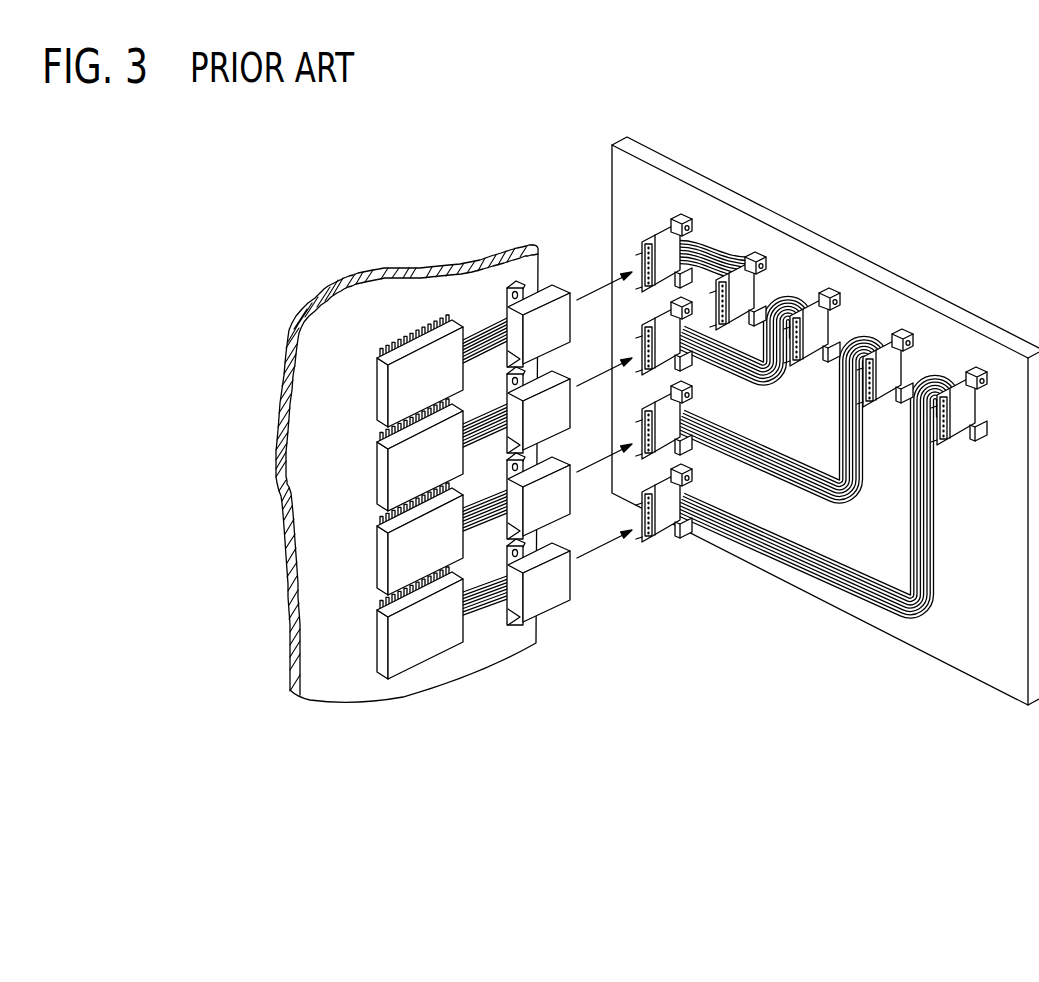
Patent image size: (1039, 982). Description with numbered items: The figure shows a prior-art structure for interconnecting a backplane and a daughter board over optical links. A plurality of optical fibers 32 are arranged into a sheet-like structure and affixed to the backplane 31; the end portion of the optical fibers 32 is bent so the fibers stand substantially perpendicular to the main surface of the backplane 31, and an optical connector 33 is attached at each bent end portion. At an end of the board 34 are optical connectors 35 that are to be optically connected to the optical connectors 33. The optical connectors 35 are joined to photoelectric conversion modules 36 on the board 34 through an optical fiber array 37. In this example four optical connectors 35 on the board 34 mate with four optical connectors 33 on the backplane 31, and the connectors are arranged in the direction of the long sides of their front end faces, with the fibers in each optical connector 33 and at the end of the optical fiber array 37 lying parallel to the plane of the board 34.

The backplane 31 is at (878, 302).
The optical fibers 32 is at (718, 252).
The optical connector 33 is at (662, 230).
The board 34 is at (415, 297).
The optical connector 35 is at (548, 290).
The photoelectric conversion module 36 is at (398, 391).
The optical fiber array 37 is at (478, 333).